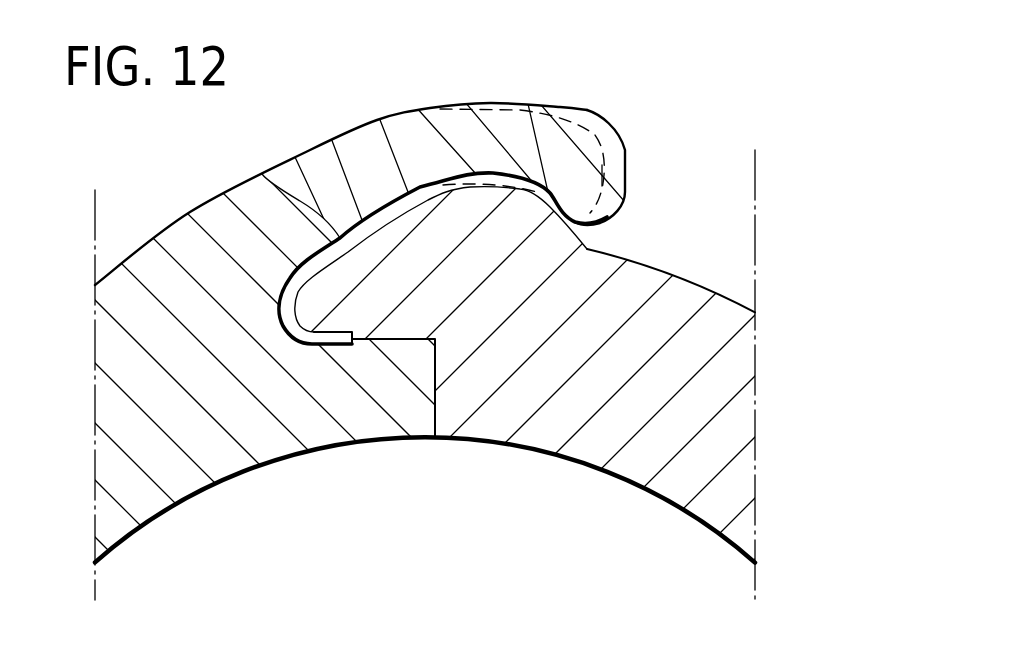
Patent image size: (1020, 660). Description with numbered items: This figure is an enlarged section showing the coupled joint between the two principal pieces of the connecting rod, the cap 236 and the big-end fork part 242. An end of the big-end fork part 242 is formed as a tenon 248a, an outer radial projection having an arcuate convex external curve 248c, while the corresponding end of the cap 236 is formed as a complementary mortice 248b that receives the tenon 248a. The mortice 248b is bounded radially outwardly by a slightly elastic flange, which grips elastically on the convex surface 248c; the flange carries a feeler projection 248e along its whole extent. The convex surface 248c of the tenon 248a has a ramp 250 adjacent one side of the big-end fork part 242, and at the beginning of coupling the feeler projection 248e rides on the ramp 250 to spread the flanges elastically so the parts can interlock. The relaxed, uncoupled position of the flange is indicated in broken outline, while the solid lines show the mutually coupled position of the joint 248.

The cap 236 is at (199, 200).
The big-end fork part 242 is at (692, 275).
The sealing lip 248 is at (503, 121).
The tenon 248a is at (423, 221).
The mortice 248b is at (410, 339).
The arcuate convex external curve 248c is at (262, 174).
The feeler projection 248e is at (583, 200).
The ramp 250 is at (573, 238).